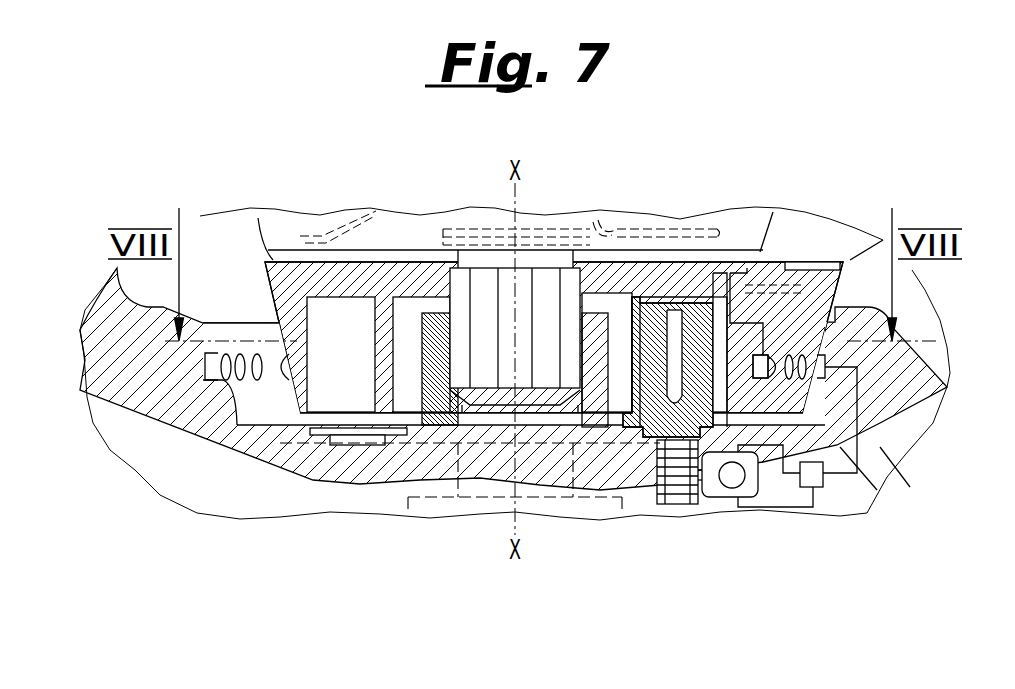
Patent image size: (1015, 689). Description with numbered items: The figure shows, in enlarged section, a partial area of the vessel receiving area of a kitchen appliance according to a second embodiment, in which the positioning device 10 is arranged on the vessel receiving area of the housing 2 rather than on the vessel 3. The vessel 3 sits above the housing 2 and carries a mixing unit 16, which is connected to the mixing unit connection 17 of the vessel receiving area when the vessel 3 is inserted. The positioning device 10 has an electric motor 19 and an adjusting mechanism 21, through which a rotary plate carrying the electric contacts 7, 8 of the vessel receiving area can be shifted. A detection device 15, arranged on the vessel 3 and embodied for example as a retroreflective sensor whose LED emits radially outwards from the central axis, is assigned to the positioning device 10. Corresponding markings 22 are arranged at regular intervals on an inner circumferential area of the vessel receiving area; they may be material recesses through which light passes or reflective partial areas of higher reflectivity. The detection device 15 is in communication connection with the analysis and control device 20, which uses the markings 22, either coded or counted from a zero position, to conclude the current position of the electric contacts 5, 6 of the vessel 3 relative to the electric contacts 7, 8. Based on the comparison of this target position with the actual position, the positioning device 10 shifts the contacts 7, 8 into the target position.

The housing 2 is at (123, 331).
The vessel 3 is at (282, 227).
The electric contact 5 is at (677, 340).
The electric contact 6 is at (648, 340).
The electric contact 7 is at (637, 387).
The electric contact 8 is at (703, 403).
The positioning device 10 is at (634, 535).
The detection device 15 is at (762, 363).
The mixing unit 16 is at (463, 220).
The mixing unit connection 17 is at (483, 373).
The electric motor 19 is at (713, 497).
The analysis and control device 20 is at (813, 477).
The adjusting mechanism 21 is at (670, 504).
The marking 22 is at (260, 380).